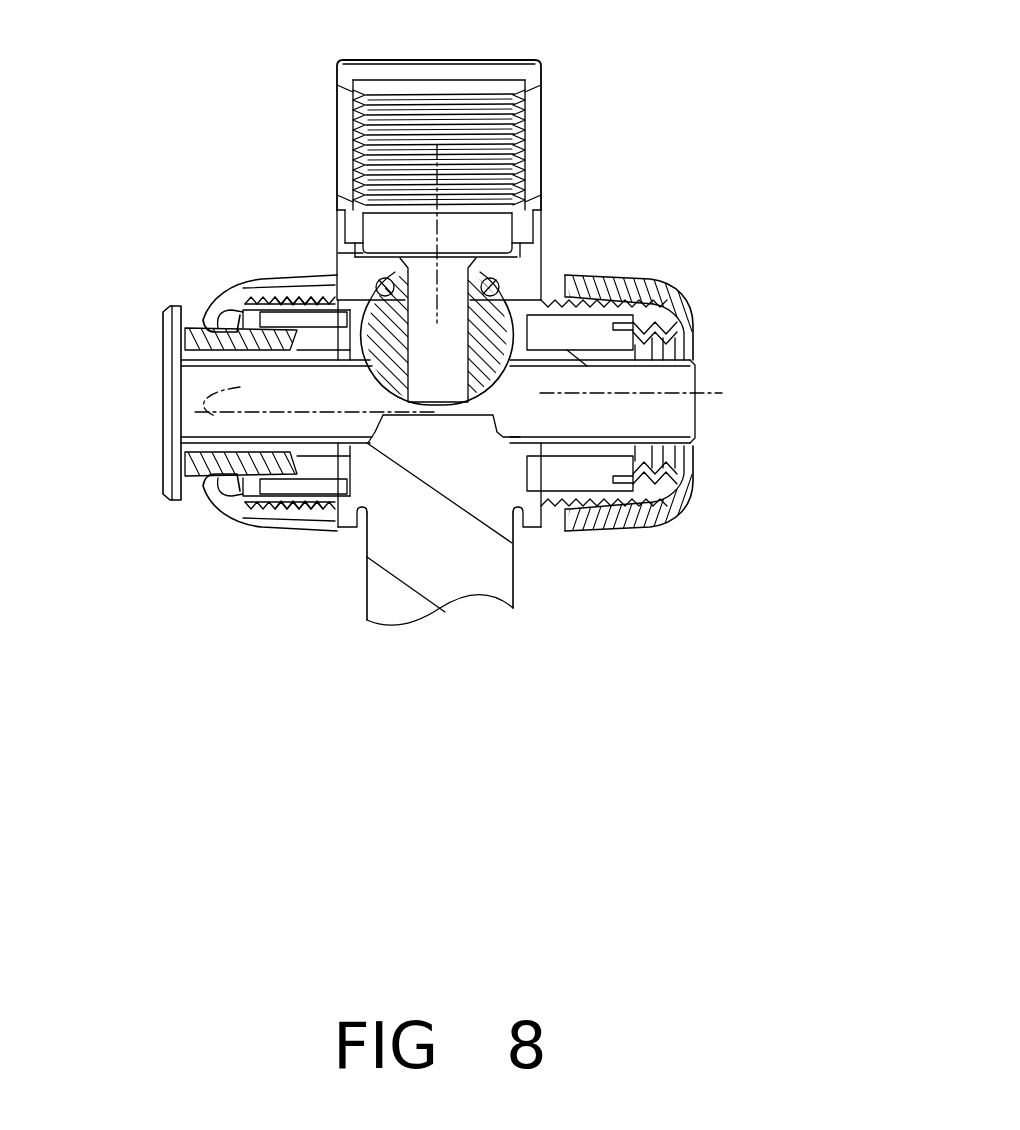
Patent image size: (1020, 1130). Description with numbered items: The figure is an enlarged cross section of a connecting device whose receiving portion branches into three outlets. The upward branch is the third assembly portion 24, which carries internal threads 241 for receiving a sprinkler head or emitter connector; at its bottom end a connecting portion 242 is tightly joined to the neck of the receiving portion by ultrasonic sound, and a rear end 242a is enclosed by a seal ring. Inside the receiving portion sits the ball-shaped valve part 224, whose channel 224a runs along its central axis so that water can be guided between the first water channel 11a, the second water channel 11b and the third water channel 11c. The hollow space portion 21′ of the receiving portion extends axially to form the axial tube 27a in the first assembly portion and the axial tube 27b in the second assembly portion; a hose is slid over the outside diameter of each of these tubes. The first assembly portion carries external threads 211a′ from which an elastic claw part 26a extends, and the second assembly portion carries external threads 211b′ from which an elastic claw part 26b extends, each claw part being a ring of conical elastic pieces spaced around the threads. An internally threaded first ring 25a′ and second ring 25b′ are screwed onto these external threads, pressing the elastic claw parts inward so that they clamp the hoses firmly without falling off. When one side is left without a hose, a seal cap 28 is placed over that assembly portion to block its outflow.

The third assembly portion 24 is at (345, 118).
The internal threads 241 is at (515, 108).
The connecting portion 242 is at (513, 263).
The rear end 242a is at (350, 260).
The first water channel 11a is at (392, 220).
The hollow space portion 21′ is at (402, 413).
The valve part 224 is at (496, 380).
The channel 224a is at (440, 333).
The second water channel 11b is at (220, 415).
The seal cap 28 is at (173, 413).
The axial tube 27a is at (260, 352).
The first ring 25a′ is at (290, 275).
The external threads 211a′ is at (330, 288).
The elastic claw part 26a is at (242, 317).
The third water channel 11c is at (667, 403).
The axial tube 27b is at (697, 450).
The second ring 25b′ is at (597, 277).
The external threads 211b′ is at (652, 290).
The elastic claw part 26b is at (653, 313).